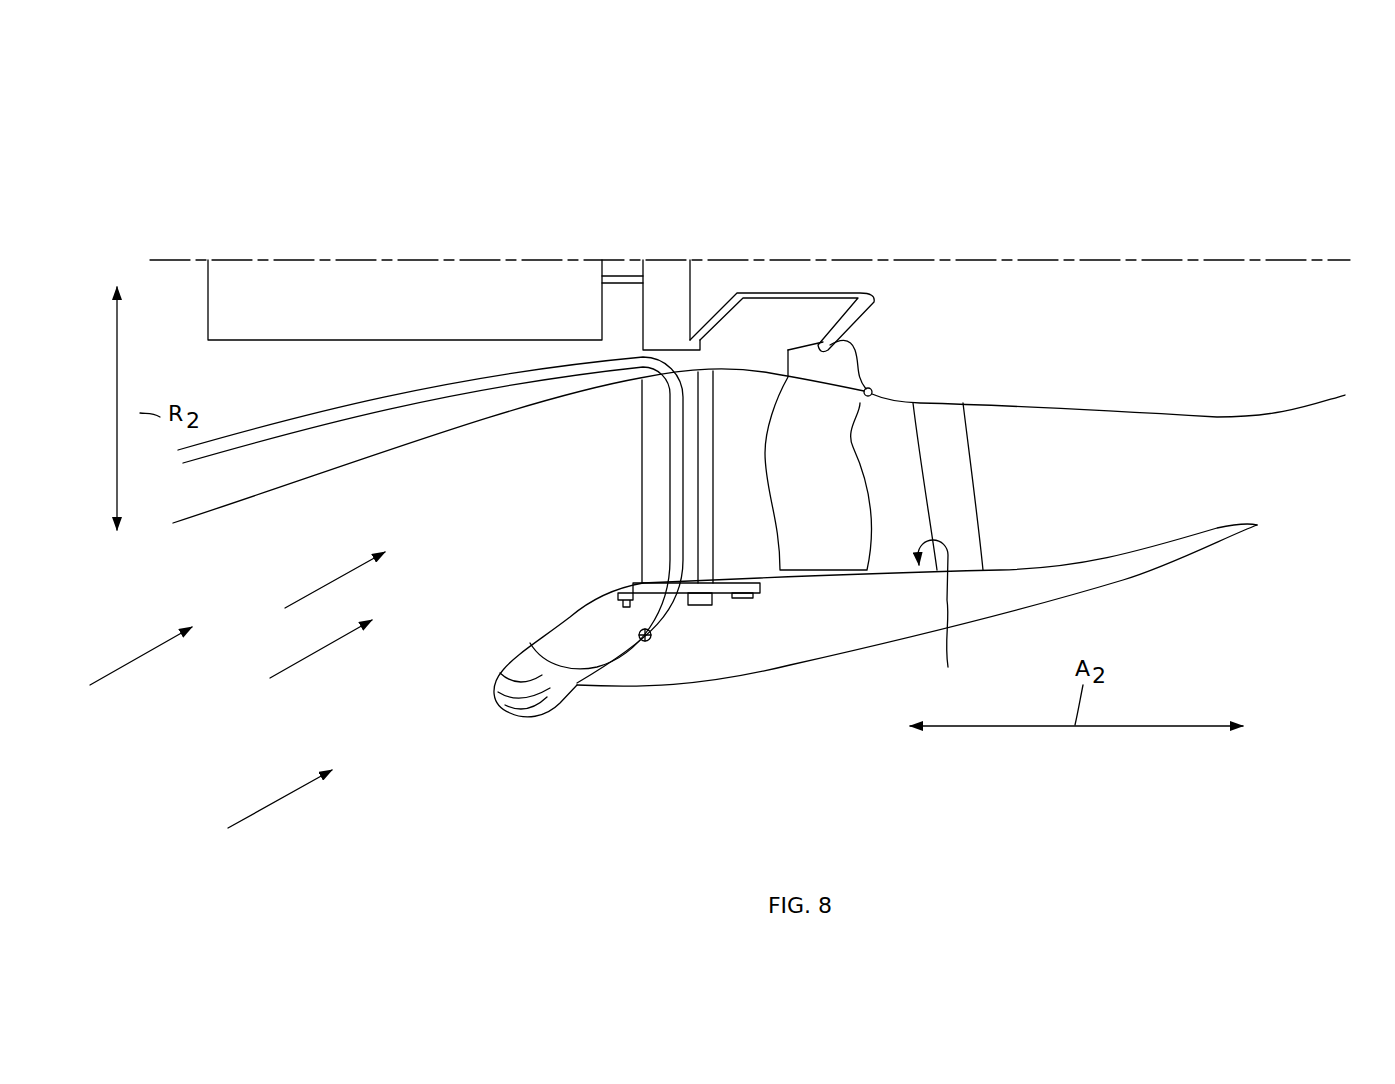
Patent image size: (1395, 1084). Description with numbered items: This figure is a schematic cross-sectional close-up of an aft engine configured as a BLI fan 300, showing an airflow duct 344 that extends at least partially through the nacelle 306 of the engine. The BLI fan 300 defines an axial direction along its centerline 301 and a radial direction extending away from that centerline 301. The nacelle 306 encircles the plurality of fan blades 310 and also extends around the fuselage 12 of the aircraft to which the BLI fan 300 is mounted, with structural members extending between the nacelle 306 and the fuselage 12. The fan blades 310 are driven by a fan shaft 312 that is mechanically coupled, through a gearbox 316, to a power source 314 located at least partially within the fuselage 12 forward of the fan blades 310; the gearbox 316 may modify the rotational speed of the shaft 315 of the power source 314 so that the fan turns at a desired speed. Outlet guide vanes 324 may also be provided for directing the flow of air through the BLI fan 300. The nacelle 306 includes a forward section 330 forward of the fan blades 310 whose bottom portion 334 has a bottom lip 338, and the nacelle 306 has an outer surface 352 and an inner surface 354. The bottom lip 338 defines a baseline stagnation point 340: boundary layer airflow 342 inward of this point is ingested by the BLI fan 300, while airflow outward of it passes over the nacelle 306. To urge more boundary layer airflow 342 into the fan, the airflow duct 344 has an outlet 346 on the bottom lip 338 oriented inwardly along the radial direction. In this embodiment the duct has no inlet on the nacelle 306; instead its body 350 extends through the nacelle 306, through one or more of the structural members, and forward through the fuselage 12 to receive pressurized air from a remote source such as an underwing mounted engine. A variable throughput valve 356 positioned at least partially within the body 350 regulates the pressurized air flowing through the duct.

The BLI fan 300 is at (1157, 142).
The centerline 301 is at (1050, 260).
The nacelle 306 is at (664, 694).
The fan blades 310 is at (843, 420).
The fan shaft 312 is at (800, 296).
The power source 314 is at (388, 273).
The shaft of the power source 315 is at (623, 285).
The gearbox 316 is at (663, 270).
The outlet guide vanes 324 is at (963, 488).
The forward section 330 is at (483, 738).
The bottom portion 334 is at (628, 475).
The bottom lip 338 is at (492, 690).
The baseline stagnation point 340 is at (489, 702).
The boundary layer airflow 342 is at (320, 650).
The airflow duct 344 is at (788, 658).
The outlet 346 is at (492, 670).
The body 350 is at (677, 612).
The outer surface 352 is at (857, 653).
The inner surface 354 is at (946, 619).
The variable throughput valve 356 is at (652, 635).
The fuselage 12 is at (250, 500).